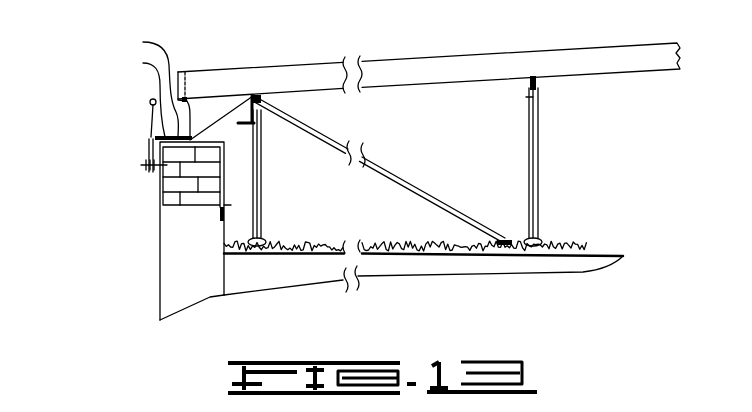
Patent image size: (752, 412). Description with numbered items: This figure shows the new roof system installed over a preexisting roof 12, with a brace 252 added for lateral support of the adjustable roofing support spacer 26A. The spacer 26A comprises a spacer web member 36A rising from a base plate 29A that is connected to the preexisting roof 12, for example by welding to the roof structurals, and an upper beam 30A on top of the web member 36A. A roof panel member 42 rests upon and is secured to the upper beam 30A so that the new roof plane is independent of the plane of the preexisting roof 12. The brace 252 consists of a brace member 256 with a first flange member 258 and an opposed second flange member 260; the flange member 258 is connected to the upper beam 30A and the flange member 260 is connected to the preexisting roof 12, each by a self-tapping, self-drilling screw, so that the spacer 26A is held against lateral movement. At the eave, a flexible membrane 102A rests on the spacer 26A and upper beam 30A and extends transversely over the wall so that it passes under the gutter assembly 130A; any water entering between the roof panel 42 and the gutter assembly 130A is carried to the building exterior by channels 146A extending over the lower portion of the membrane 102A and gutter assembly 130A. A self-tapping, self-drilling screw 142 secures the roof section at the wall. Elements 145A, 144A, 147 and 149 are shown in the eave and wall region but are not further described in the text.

The roof panel member 42 is at (427, 59).
The flexible membrane 102A is at (219, 122).
The flashing 145A is at (138, 83).
The channel 146A is at (141, 93).
The gutter assembly 130A is at (144, 101).
The top plate 144A is at (152, 121).
The wall cladding 147 is at (148, 151).
The self-tapping, self-drilling screw 142 is at (140, 165).
The masonry wall 149 is at (225, 175).
The adjustable roofing support spacer 26A is at (462, 161).
The first flange member 258 is at (265, 100).
The first spacer web member 36A is at (264, 200).
The upper beam 30A is at (530, 87).
The brace 252 is at (368, 158).
The brace member 256 is at (403, 175).
The second flange member 260 is at (503, 240).
The base plate 29A is at (257, 254).
The preexisting roof 12 is at (585, 272).